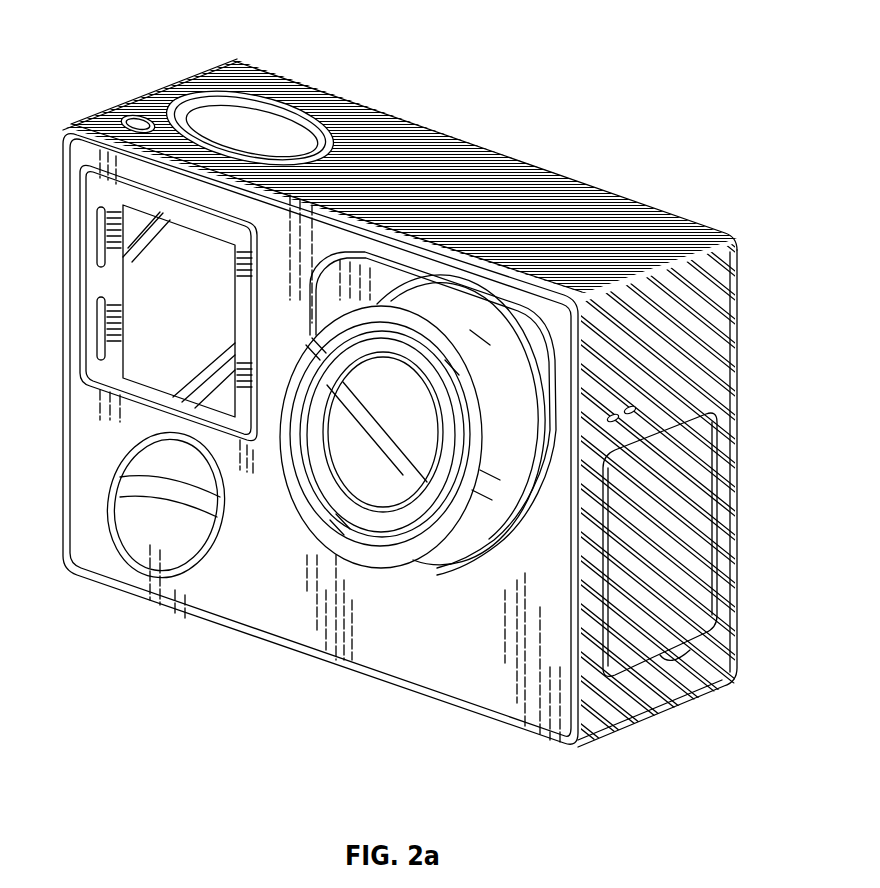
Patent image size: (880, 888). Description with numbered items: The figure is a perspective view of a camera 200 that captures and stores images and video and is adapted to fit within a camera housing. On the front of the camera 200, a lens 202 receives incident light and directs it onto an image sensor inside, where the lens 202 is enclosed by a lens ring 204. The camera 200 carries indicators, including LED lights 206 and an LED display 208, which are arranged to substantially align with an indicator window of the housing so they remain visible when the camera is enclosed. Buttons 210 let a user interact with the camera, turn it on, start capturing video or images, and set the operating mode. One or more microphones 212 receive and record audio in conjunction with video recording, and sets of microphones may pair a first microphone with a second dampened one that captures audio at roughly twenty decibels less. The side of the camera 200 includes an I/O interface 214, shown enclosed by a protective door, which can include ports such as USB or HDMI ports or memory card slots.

The camera 200 is at (118, 79).
The lens 202 is at (378, 490).
The lens ring 204 is at (480, 542).
The LED lights 206 is at (90, 323).
The LED display 208 is at (195, 318).
The buttons 210 is at (280, 124).
The microphones 212 is at (648, 400).
The I/O interface 214 is at (692, 565).